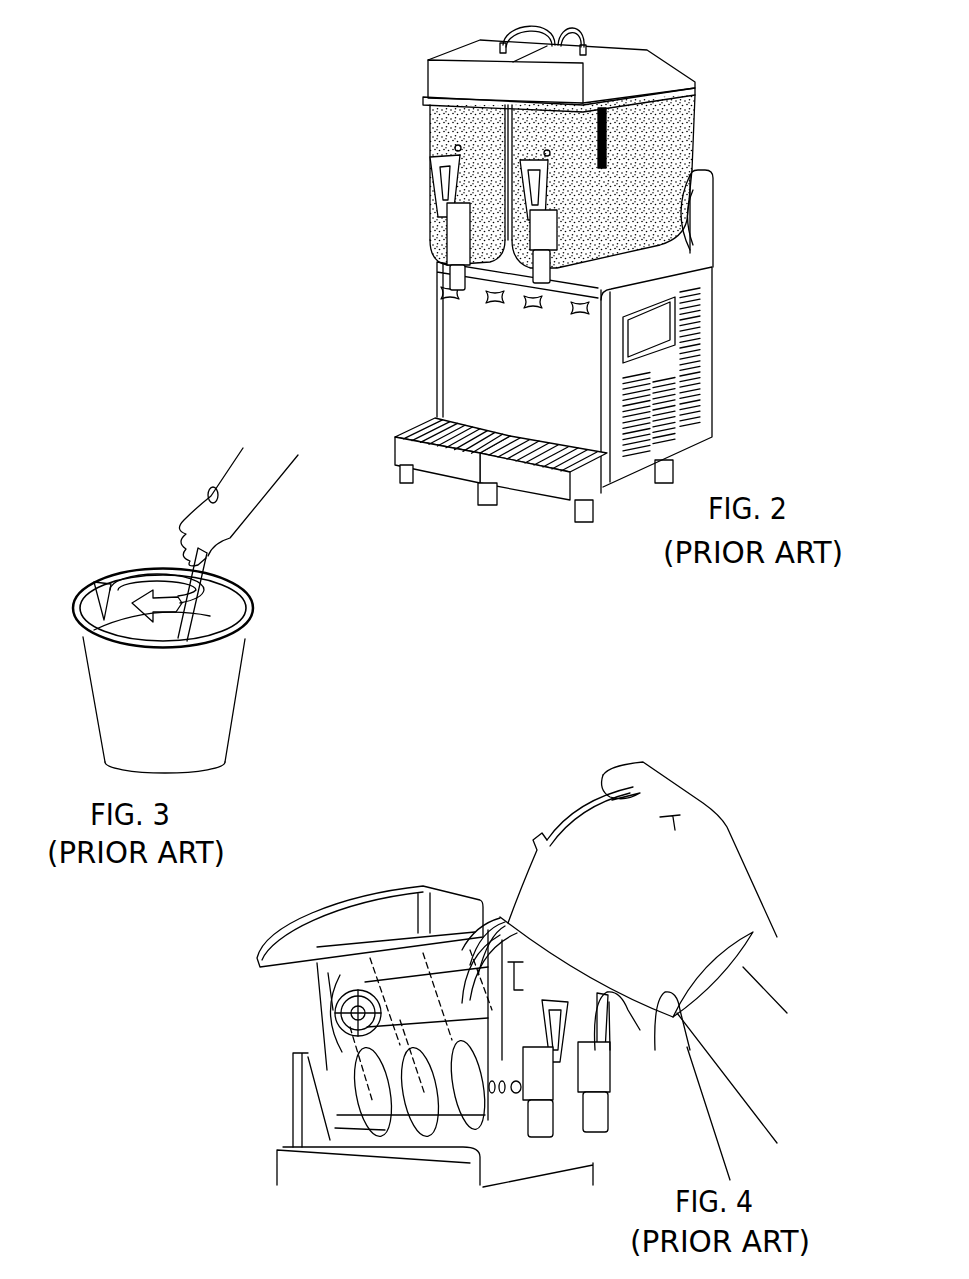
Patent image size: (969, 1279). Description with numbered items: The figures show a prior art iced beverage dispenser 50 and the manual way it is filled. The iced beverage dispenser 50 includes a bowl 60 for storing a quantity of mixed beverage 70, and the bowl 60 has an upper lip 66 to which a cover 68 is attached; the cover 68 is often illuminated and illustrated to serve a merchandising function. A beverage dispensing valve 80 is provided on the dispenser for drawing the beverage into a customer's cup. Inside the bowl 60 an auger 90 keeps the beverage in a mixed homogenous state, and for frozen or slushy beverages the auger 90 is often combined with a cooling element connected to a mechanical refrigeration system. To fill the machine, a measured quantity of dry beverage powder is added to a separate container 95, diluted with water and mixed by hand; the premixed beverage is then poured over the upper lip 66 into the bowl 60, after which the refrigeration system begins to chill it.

In FIG. 2, the iced beverage dispenser 50 is at (395, 393).
In FIG. 4, the iced beverage dispenser 50 is at (288, 1031).
In FIG. 2, the bowl 60 is at (440, 223).
In FIG. 4, the bowl 60 is at (313, 983).
In FIG. 2, the upper lip 66 is at (428, 124).
In FIG. 4, the upper lip 66 is at (517, 933).
In FIG. 2, the cover 68 is at (478, 50).
In FIG. 2, the mixed beverage 70 is at (672, 145).
In FIG. 3, the mixed beverage 70 is at (210, 630).
In FIG. 4, the mixed beverage 70 is at (737, 952).
In FIG. 2, the beverage dispensing valve 80 is at (455, 237).
In FIG. 4, the beverage dispensing valve 80 is at (547, 1120).
In FIG. 4, the auger 90 is at (383, 1100).
In FIG. 3, the separate container 95 is at (237, 687).
In FIG. 4, the separate container 95 is at (712, 982).